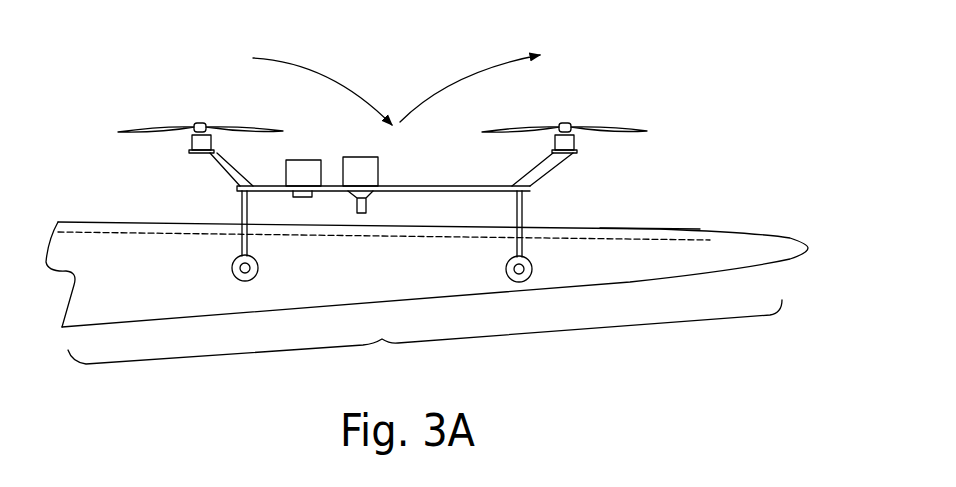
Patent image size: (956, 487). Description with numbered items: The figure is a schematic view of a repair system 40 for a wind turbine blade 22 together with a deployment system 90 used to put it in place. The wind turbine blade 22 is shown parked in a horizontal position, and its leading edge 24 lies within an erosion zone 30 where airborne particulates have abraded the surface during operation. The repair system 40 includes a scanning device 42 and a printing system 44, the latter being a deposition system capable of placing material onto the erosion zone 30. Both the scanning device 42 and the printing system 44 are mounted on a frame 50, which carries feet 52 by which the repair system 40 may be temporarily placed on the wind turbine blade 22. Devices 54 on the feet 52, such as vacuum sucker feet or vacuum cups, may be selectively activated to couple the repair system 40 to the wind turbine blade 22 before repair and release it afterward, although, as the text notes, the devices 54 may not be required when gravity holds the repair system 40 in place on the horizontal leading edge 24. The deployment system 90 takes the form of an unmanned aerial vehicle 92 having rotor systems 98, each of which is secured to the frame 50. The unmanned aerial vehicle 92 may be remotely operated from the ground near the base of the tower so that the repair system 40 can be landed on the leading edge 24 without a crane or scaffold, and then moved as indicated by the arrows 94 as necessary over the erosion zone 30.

The wind turbine blade 22 is at (779, 232).
The leading edge 24 is at (662, 228).
The erosion zone 30 is at (425, 343).
The repair system 40 is at (391, 155).
The scanning device 42 is at (303, 166).
The printing system 44 is at (372, 171).
The frame 50 is at (237, 186).
The feet 52 is at (241, 243).
The devices 54 is at (243, 282).
The deployment system 90 is at (637, 114).
The unmanned aerial vehicle 92 is at (562, 154).
The arrows 94 is at (273, 58).
The rotor systems 98 is at (154, 128).